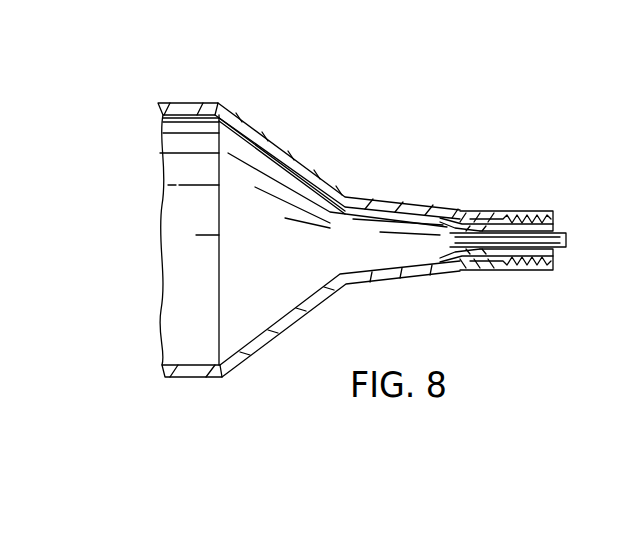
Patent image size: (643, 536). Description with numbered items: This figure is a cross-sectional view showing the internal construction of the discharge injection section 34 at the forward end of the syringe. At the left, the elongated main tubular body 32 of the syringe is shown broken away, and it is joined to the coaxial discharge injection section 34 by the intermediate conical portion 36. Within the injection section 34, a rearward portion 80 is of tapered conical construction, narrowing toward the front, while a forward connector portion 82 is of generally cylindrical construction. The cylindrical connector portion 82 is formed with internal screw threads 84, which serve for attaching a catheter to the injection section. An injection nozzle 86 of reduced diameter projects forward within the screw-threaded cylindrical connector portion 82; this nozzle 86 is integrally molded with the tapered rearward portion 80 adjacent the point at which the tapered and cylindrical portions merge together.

The main tubular body 32 is at (197, 102).
The discharge injection section 34 is at (383, 198).
The intermediate conical portion 36 is at (273, 143).
The rearward portion 80 is at (398, 277).
The forward connector portion 82 is at (510, 270).
The internal screw threads 84 is at (523, 212).
The injection nozzle 86 is at (565, 249).